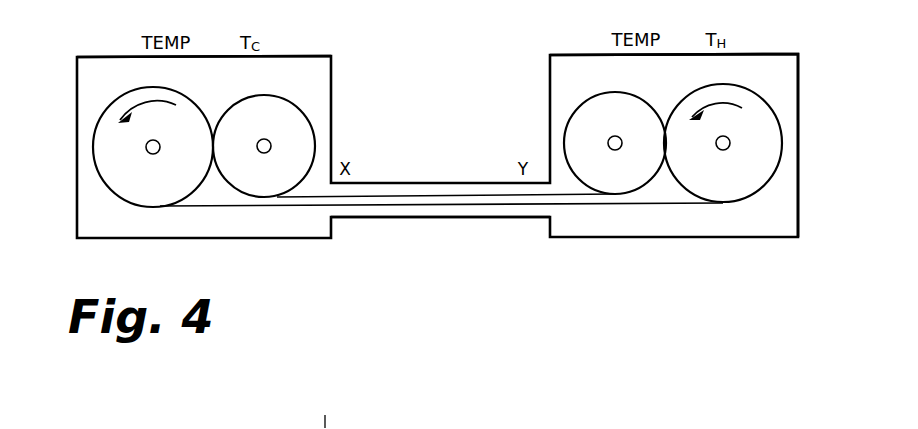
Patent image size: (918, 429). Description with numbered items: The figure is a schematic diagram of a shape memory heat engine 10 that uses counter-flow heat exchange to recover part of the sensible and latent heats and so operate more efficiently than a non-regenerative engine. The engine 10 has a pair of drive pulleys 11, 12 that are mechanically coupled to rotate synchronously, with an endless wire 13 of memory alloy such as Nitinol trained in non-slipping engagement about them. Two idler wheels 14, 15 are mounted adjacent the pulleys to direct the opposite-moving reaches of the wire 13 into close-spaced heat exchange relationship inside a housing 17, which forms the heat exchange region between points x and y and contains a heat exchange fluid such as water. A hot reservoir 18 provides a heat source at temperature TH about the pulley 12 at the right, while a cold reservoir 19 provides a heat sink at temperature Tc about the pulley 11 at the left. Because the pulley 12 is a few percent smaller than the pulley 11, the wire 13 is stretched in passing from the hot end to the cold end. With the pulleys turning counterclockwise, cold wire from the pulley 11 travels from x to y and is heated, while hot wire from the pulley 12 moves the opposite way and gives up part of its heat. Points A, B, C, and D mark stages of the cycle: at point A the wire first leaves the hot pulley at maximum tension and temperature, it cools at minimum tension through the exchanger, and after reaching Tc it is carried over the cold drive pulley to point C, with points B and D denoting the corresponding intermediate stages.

The engine 10 is at (66, 97).
The cold reservoir 19 is at (100, 56).
The hot reservoir 18 is at (798, 58).
The drive pulley 11 is at (99, 173).
The idler wheel 14 is at (293, 103).
The idler wheel 15 is at (574, 113).
The drive pulley 12 is at (770, 180).
The endless wire 13 is at (230, 207).
The housing 17 is at (463, 218).
The point A is at (662, 116).
The point B is at (501, 181).
The point C is at (157, 207).
The point D is at (374, 218).